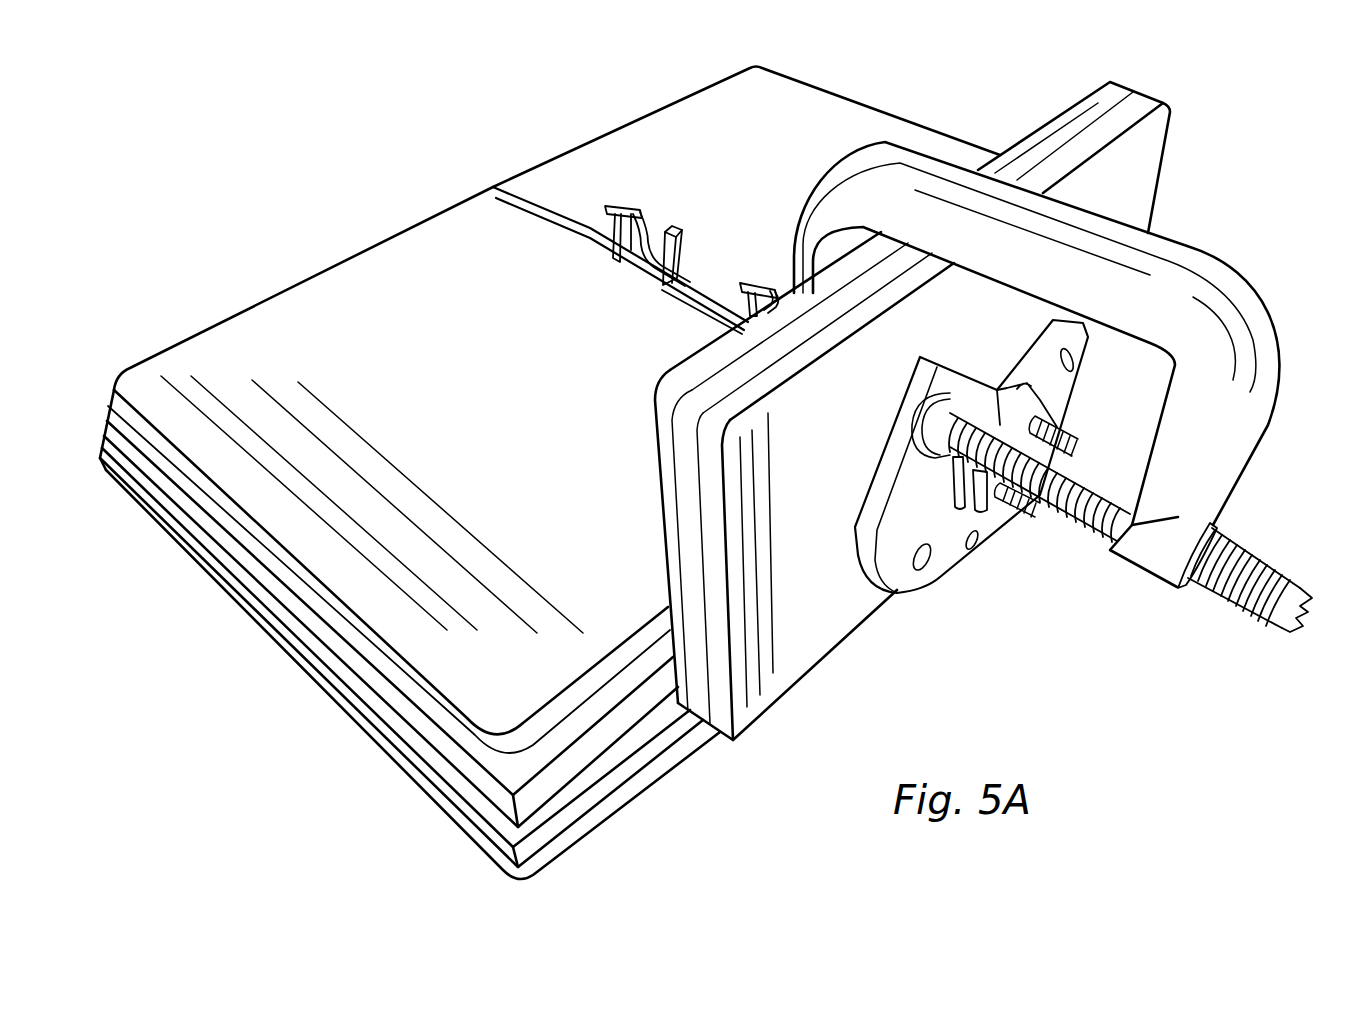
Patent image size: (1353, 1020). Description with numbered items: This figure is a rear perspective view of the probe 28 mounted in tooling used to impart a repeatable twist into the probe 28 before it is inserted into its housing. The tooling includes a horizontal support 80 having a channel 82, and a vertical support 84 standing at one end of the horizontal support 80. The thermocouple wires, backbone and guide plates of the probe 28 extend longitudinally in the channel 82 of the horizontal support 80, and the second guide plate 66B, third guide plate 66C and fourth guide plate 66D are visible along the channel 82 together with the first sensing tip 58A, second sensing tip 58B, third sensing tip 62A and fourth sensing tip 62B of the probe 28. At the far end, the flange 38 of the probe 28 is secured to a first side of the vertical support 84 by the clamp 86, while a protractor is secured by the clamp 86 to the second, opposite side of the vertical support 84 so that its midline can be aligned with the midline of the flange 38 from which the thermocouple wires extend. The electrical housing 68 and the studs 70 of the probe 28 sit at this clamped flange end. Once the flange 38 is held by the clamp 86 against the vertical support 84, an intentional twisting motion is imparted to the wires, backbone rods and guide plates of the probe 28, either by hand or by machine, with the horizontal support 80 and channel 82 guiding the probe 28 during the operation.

The probe 28 is at (701, 220).
The flange 38 is at (927, 578).
The first sensing tip 58A is at (760, 282).
The second sensing tip 58B is at (740, 287).
The third sensing tip 62A is at (623, 207).
The fourth sensing tip 62B is at (607, 209).
The second guide plate 66B is at (738, 322).
The third guide plate 66C is at (660, 280).
The fourth guide plate 66D is at (616, 254).
The electrical housing 68 is at (1027, 410).
The studs 70 is at (1072, 440).
The horizontal support 80 is at (550, 473).
The channel 82 is at (493, 189).
The vertical support 84 is at (912, 411).
The clamp 86 is at (1180, 262).